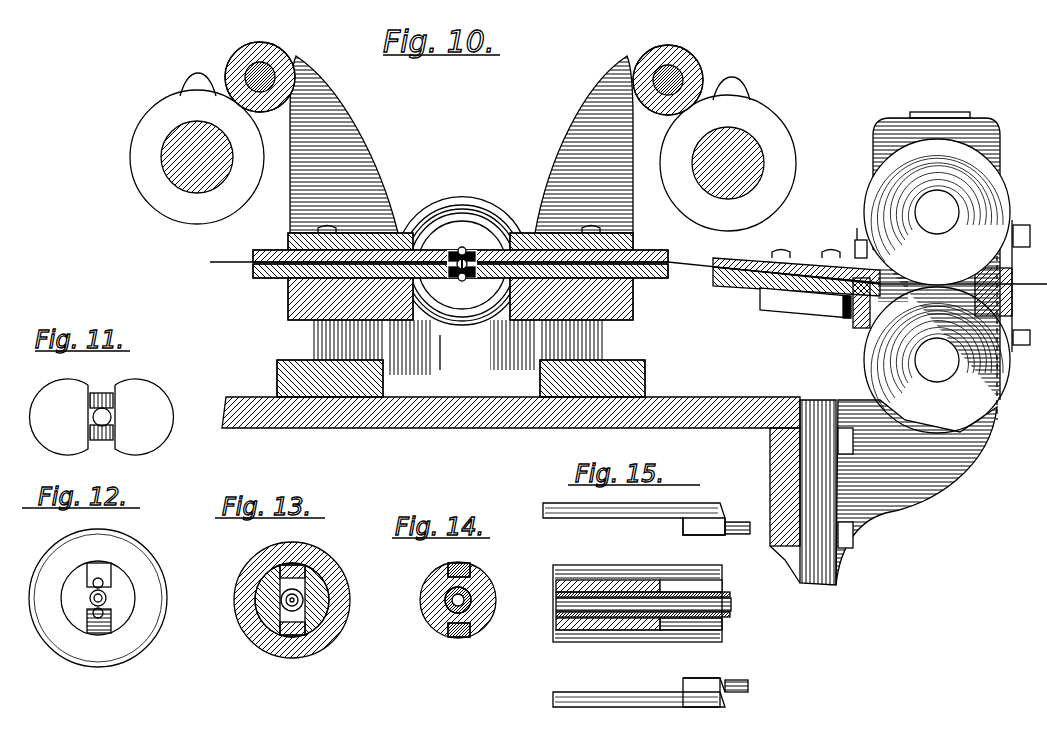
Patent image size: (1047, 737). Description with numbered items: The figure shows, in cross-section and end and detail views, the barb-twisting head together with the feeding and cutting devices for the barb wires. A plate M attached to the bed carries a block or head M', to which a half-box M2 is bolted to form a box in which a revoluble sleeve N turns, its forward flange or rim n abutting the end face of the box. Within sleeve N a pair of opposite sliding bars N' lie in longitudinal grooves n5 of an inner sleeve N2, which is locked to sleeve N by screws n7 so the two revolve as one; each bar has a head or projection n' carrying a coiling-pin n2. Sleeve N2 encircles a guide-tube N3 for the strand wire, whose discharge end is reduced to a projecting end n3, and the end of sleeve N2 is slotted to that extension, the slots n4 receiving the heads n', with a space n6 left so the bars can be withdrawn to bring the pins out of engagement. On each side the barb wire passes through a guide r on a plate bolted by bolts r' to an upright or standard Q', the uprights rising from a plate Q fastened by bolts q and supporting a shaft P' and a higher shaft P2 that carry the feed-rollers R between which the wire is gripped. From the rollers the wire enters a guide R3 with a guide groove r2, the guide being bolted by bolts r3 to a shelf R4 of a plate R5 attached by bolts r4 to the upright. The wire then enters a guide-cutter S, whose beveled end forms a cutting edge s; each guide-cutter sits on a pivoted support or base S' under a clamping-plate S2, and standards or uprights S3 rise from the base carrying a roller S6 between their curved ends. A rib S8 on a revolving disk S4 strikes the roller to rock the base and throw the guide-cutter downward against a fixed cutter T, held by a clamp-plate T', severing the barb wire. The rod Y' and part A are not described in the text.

In FIG. 10, the roller S6 is at (240, 50).
In FIG. 10, the projection or rib S8 is at (204, 62).
In FIG. 10, the disk S4 is at (168, 126).
In FIG. 10, the standard or upright S3 is at (461, 144).
In FIG. 10, the clamping-plate S2 is at (457, 224).
In FIG. 10, the half-box M2 is at (462, 205).
In FIG. 10, the revoluble sleeve N is at (462, 239).
In FIG. 12, the revoluble sleeve N is at (98, 588).
In FIG. 13, the revoluble sleeve N is at (292, 588).
In FIG. 10, the sleeve N2 is at (472, 240).
In FIG. 11, the sleeve N2 is at (125, 412).
In FIG. 12, the sleeve N2 is at (105, 585).
In FIG. 14, the sleeve N2 is at (496, 603).
In FIG. 10, the coiling-pin n2 is at (468, 210).
In FIG. 12, the coiling-pin n2 is at (111, 594).
In FIG. 13, the coiling-pin n2 is at (305, 585).
In FIG. 15, the coiling-pin n2 is at (750, 600).
In FIG. 10, the guide-tube N3 is at (478, 262).
In FIG. 12, the guide-tube N3 is at (104, 600).
In FIG. 13, the guide-tube N3 is at (305, 610).
In FIG. 14, the guide-tube N3 is at (470, 592).
In FIG. 10, the flange or rim n is at (459, 231).
In FIG. 12, the flange or rim n is at (89, 561).
In FIG. 10, the guide-cutter S is at (460, 243).
In FIG. 10, the cutting edge s is at (480, 257).
In FIG. 10, the rod Y' is at (628, 258).
In FIG. 10, the support or base S' is at (444, 284).
In FIG. 10, the cutter T is at (459, 347).
In FIG. 10, the clamp-plate T' is at (512, 345).
In FIG. 10, the block or head M' is at (455, 351).
In FIG. 10, the plate M is at (455, 378).
In FIG. 14, the plate M is at (487, 647).
In FIG. 10, the base plate A is at (511, 421).
In FIG. 10, the plate Q is at (883, 492).
In FIG. 10, the bolts q is at (866, 535).
In FIG. 10, the upright or standard Q' is at (947, 311).
In FIG. 10, the guide r is at (959, 292).
In FIG. 10, the bolts r' is at (1028, 288).
In FIG. 10, the shaft P2 is at (950, 205).
In FIG. 10, the feed-roller R is at (958, 282).
In FIG. 10, the shaft P' is at (937, 360).
In FIG. 10, the guide groove or recess r2 is at (725, 292).
In FIG. 10, the bolts r3 is at (825, 235).
In FIG. 10, the guide R3 is at (746, 240).
In FIG. 10, the shelf R4 is at (805, 300).
In FIG. 10, the plate R5 is at (860, 310).
In FIG. 10, the bolts r4 is at (835, 360).
In FIG. 11, the groove n5 is at (100, 393).
In FIG. 14, the groove n5 is at (470, 570).
In FIG. 15, the groove n5 is at (615, 580).
In FIG. 11, the slot n4 is at (112, 408).
In FIG. 15, the slot n4 is at (728, 594).
In FIG. 12, the sliding bar N' is at (114, 599).
In FIG. 13, the sliding bar N' is at (313, 605).
In FIG. 14, the sliding bar N' is at (465, 583).
In FIG. 15, the sliding bar N' is at (634, 618).
In FIG. 12, the head or projection n' is at (72, 600).
In FIG. 15, the head or projection n' is at (704, 591).
In FIG. 13, the screws n7 is at (303, 600).
In FIG. 15, the edge a is at (753, 478).
In FIG. 15, the space n6 is at (668, 585).
In FIG. 15, the projecting end n3 is at (732, 605).